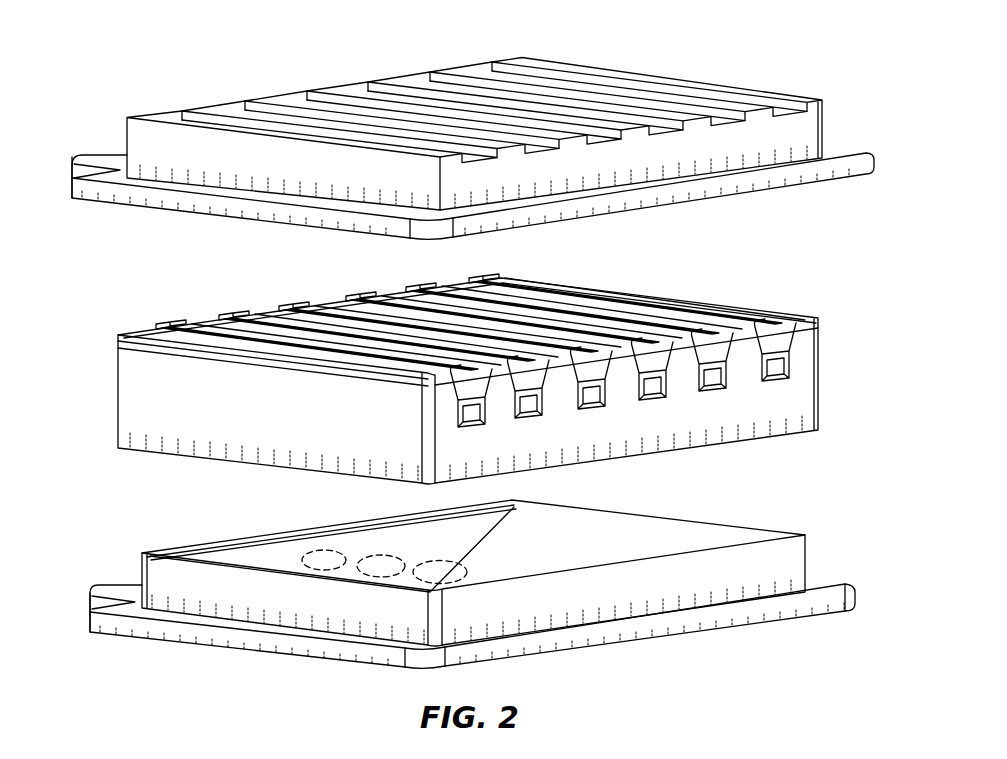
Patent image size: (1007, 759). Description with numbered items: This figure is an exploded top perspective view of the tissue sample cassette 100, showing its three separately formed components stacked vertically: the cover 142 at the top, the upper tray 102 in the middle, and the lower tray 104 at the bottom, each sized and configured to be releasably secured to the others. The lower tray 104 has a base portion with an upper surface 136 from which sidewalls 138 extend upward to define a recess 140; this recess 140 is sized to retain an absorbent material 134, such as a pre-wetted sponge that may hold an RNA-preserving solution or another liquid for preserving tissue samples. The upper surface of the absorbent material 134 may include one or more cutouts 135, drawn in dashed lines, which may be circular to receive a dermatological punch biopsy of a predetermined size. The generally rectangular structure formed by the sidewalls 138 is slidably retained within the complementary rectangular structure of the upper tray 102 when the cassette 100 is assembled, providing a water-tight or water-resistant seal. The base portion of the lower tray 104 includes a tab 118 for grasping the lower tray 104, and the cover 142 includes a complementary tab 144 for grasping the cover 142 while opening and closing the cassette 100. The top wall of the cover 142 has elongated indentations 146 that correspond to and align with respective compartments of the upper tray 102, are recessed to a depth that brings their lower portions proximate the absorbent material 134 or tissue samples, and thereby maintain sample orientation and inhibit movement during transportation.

The tissue sample cassette 100 is at (210, 70).
The upper tray 102 is at (822, 370).
The lower tray 104 is at (808, 558).
The tab 118 is at (110, 590).
The absorbent material 134 is at (675, 523).
The cutouts 135 is at (464, 544).
The upper surface 136 is at (835, 590).
The sidewalls 138 is at (678, 588).
The recess 140 is at (158, 555).
The cover 142 is at (823, 128).
The tab 144 is at (98, 157).
The indentations 146 is at (527, 90).